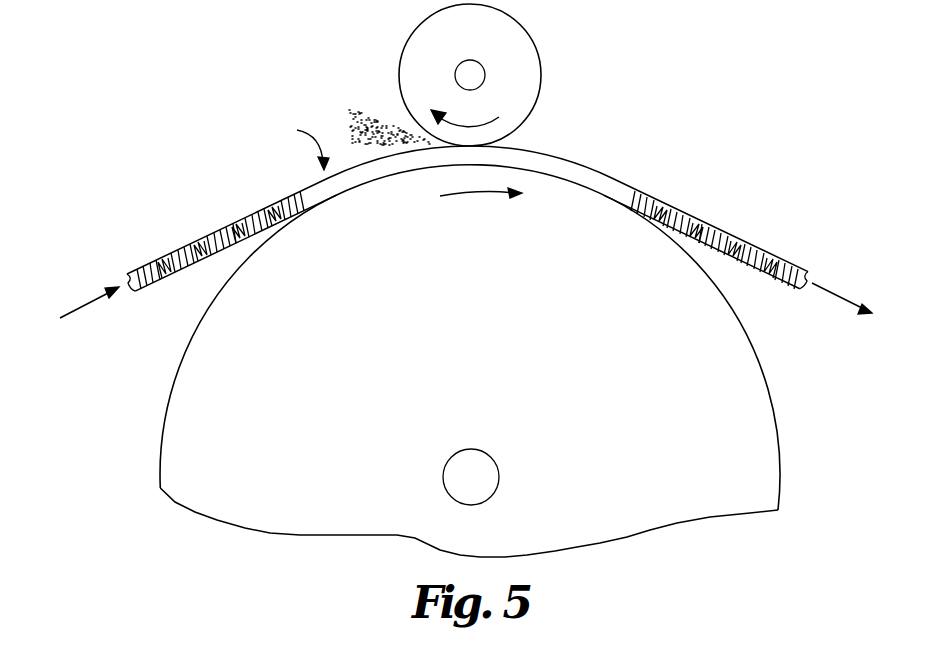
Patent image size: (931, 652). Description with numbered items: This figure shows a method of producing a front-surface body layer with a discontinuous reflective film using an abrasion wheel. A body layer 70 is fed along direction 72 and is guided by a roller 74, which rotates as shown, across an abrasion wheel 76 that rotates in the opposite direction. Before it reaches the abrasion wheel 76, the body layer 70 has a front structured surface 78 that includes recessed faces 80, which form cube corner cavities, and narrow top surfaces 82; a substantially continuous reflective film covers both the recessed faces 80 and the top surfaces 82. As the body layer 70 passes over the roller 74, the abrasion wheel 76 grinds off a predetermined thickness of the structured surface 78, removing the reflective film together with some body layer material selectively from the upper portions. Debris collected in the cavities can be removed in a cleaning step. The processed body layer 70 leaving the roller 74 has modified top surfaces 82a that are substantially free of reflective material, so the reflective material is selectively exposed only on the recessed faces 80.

The body layer 70 is at (137, 290).
The direction 72 is at (80, 308).
The roller 74 is at (486, 255).
The abrasion wheel 76 is at (487, 43).
The front structured surface 78 is at (298, 140).
The recessed faces 80 is at (267, 200).
The narrow top surfaces 82 is at (233, 215).
The modified top surfaces 82a is at (700, 218).